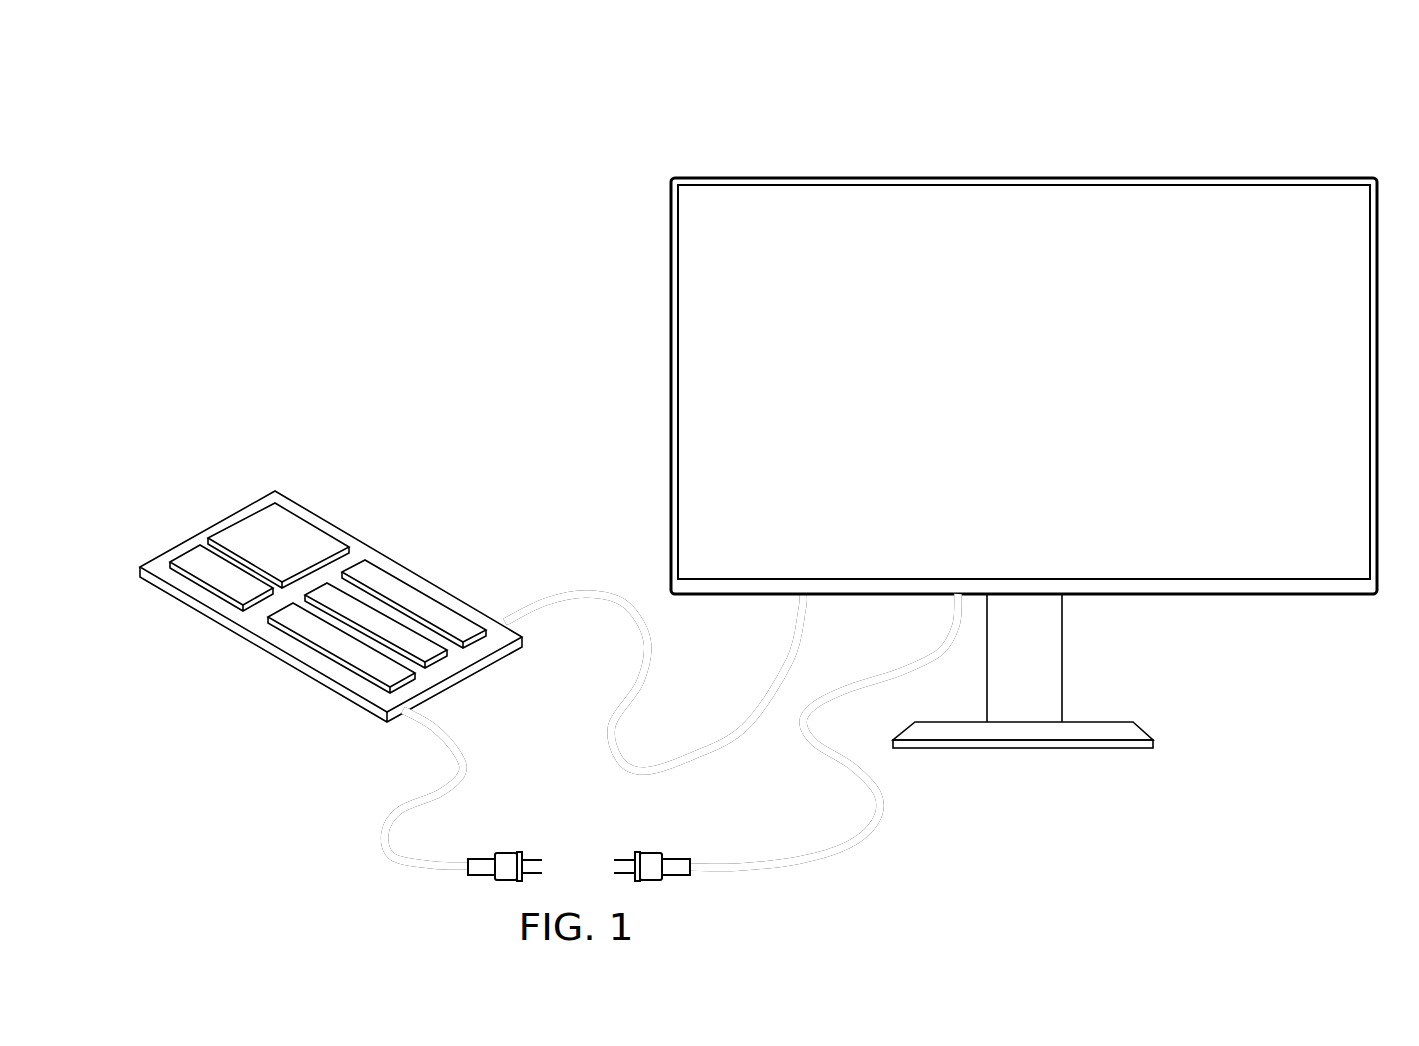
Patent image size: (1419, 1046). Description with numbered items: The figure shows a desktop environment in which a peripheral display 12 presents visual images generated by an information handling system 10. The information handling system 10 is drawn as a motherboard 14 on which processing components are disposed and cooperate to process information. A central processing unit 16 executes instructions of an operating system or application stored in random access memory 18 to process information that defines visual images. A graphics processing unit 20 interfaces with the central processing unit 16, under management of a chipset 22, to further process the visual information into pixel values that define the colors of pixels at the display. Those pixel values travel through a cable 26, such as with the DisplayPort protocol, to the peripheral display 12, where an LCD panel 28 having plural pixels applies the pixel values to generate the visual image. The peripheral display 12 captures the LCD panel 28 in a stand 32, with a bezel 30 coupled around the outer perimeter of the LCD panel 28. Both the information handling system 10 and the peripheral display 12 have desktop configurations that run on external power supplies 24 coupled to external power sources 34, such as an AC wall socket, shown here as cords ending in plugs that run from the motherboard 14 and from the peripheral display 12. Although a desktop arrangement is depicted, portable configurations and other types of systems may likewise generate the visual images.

The information handling system 10 is at (434, 489).
The peripheral display 12 is at (1262, 153).
The motherboard 14 is at (240, 502).
The central processing unit (CPU) 16 is at (305, 534).
The random access memory (RAM) 18 is at (191, 556).
The graphics processing unit (GPU) 20 is at (457, 616).
The chipset 22 is at (450, 650).
The external power supply 24 is at (382, 675).
The cable 26 is at (588, 592).
The LCD panel 28 is at (1024, 382).
The bezel 30 is at (735, 177).
The stand 32 is at (1153, 743).
The power source 34 is at (395, 862).